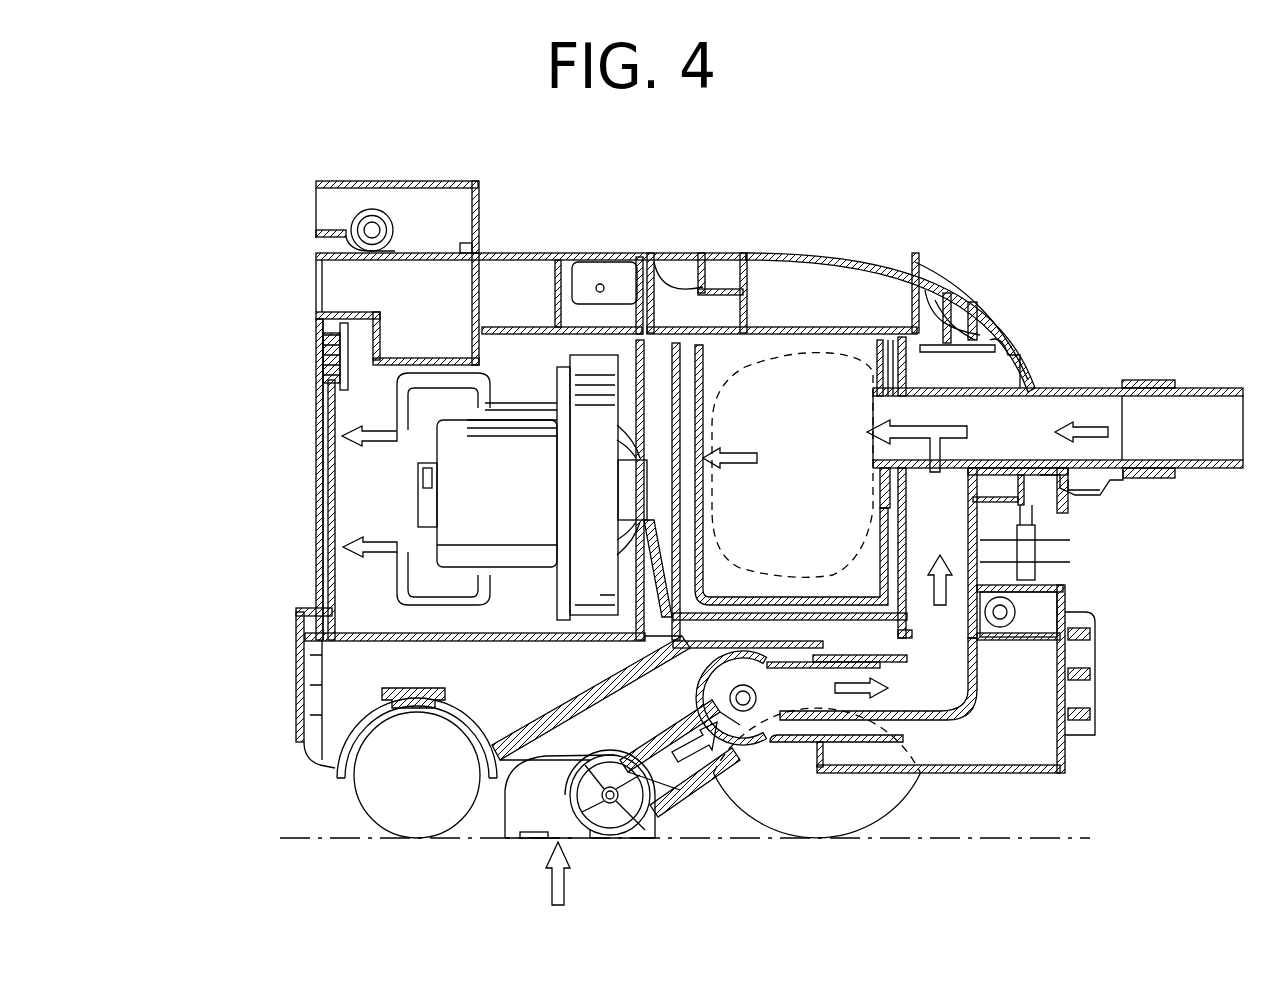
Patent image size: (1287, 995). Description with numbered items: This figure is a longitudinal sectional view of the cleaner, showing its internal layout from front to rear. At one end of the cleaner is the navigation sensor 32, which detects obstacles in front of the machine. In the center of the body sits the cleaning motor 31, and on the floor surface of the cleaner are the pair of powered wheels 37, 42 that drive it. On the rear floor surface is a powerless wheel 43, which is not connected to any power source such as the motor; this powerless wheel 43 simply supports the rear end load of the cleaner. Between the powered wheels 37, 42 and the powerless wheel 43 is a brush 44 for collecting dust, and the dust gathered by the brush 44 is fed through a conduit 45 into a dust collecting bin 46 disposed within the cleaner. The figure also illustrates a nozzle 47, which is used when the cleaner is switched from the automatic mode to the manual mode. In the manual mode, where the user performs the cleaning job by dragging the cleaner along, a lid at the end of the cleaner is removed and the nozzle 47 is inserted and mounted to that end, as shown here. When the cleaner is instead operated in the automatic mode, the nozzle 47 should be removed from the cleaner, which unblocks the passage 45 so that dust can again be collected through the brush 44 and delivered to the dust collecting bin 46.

The cleaning motor 31 is at (500, 447).
The navigation sensor 32 is at (1037, 547).
The powered wheel 37 is at (871, 800).
The powered wheel 42 is at (880, 815).
The powerless wheel 43 is at (355, 800).
The brush 44 is at (496, 822).
The conduit 45 is at (955, 657).
The dust collecting bin 46 is at (787, 345).
The nozzle 47 is at (1208, 412).